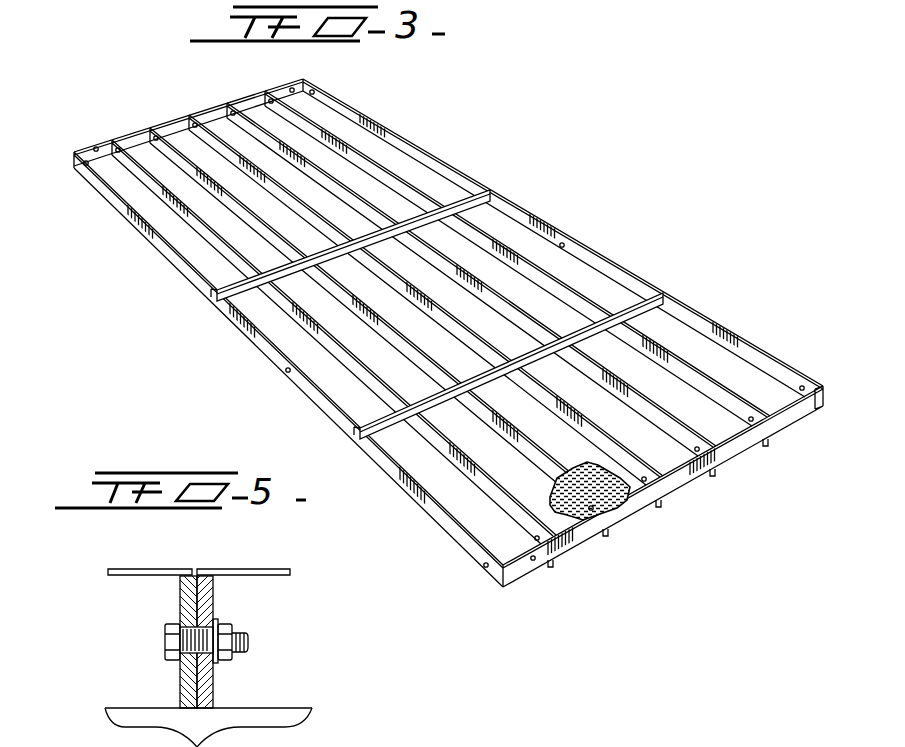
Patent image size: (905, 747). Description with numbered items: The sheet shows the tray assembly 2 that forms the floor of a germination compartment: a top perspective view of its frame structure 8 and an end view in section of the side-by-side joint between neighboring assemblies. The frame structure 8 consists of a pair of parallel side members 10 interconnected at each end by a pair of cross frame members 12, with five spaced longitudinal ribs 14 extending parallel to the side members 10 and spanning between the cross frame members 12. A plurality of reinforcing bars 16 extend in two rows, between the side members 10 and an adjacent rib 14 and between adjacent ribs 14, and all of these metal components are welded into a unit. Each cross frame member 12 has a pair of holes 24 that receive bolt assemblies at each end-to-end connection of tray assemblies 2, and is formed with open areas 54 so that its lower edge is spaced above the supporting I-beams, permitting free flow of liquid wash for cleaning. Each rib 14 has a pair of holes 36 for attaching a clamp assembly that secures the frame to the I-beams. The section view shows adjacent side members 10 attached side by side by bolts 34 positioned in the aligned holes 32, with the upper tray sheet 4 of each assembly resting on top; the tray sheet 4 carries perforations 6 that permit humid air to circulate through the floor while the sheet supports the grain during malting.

In FIG. 3, the tray assembly 2 is at (549, 198).
In FIG. 3, the upper tray sheet 4 is at (610, 497).
In FIG. 5, the upper tray sheet 4 is at (140, 569).
In FIG. 3, the perforations 6 is at (583, 513).
In FIG. 3, the frame structure 8 is at (165, 122).
In FIG. 3, the side members 10 is at (240, 330).
In FIG. 5, the side members 10 is at (190, 680).
In FIG. 3, the cross frame members 12 is at (203, 117).
In FIG. 3, the longitudinal ribs 14 is at (493, 243).
In FIG. 3, the reinforcing bars 16 is at (452, 200).
In FIG. 3, the holes 24 is at (97, 148).
In FIG. 3, the aligned holes 32 is at (288, 373).
In FIG. 5, the aligned holes 32 is at (185, 625).
In FIG. 5, the bolts 34 is at (236, 645).
In FIG. 3, the holes 36 is at (270, 100).
In FIG. 3, the open areas 54 is at (535, 565).